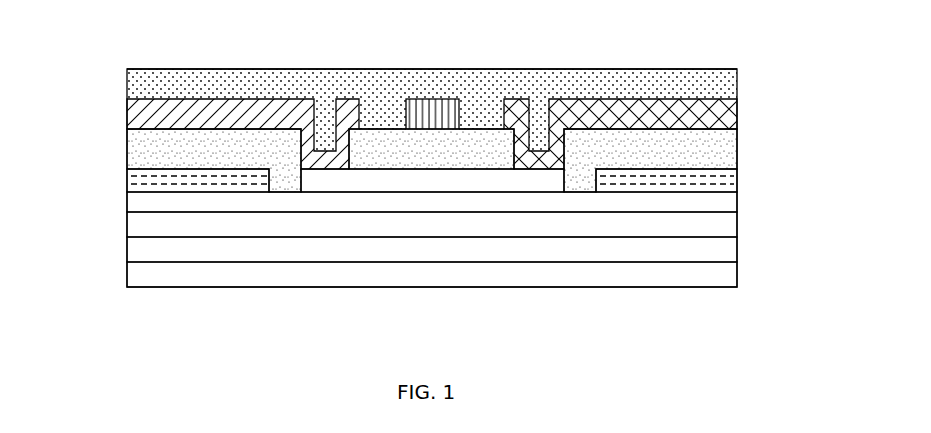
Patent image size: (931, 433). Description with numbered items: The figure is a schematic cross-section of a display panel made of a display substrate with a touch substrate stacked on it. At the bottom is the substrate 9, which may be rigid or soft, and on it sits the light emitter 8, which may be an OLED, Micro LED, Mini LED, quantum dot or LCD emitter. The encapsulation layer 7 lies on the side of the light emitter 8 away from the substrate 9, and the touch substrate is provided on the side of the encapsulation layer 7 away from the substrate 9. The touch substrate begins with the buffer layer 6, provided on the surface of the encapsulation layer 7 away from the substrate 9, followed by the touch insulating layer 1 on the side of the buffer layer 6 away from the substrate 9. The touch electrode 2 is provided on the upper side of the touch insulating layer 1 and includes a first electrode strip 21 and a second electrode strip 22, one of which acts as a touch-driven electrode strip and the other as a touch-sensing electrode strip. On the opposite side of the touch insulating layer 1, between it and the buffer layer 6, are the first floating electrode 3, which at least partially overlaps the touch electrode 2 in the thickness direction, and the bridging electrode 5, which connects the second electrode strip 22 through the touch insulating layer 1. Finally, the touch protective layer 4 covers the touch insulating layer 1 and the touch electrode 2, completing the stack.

The touch insulating layer 1 is at (727, 145).
The touch electrode 2 is at (817, 72).
The first floating electrode 3 is at (728, 183).
The touch protective layer 4 is at (277, 80).
The bridging electrode 5 is at (385, 182).
The buffer layer 6 is at (135, 203).
The encapsulation layer 7 is at (137, 227).
The light emitter 8 is at (728, 250).
The substrate 9 is at (222, 278).
The first electrode strip 21 is at (437, 100).
The second electrode strip 22 is at (137, 118).